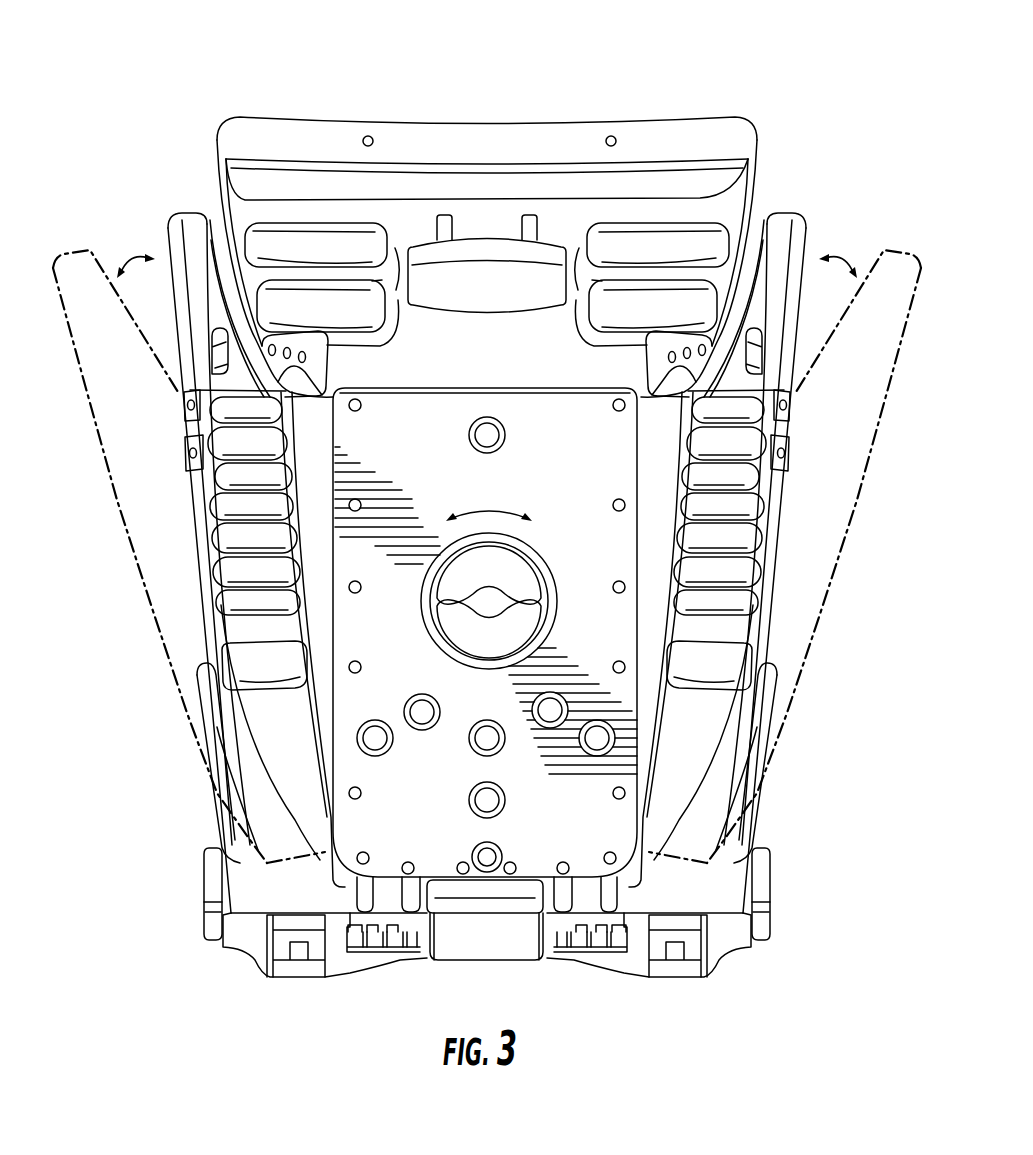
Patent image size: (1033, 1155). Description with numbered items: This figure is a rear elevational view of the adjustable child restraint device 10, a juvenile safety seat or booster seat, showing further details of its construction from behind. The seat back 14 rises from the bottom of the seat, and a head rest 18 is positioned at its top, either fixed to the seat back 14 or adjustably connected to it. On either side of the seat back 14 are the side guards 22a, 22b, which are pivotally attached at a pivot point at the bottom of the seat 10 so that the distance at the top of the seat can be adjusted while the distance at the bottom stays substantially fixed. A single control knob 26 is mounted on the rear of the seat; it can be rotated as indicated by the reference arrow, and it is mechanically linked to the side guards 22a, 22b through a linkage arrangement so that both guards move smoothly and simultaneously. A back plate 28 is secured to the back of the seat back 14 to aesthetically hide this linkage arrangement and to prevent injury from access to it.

The adjustable child restraint device 10 is at (792, 104).
The seat back 14 is at (650, 613).
The head rest 18 is at (565, 115).
The side guard 22a is at (793, 212).
The side guard 22b is at (177, 213).
The control knob 26 is at (553, 640).
The back plate 28 is at (613, 557).